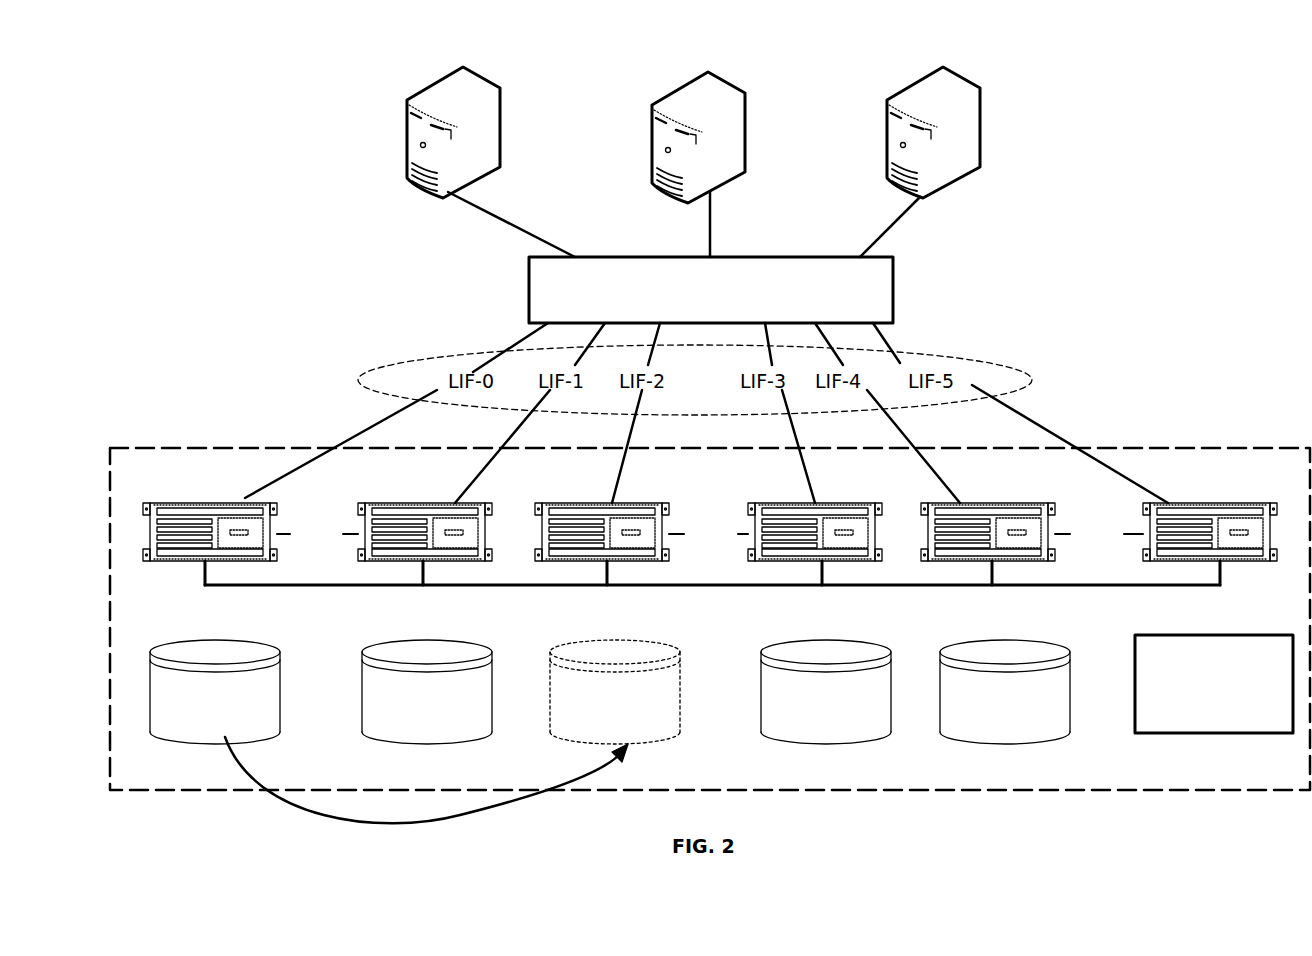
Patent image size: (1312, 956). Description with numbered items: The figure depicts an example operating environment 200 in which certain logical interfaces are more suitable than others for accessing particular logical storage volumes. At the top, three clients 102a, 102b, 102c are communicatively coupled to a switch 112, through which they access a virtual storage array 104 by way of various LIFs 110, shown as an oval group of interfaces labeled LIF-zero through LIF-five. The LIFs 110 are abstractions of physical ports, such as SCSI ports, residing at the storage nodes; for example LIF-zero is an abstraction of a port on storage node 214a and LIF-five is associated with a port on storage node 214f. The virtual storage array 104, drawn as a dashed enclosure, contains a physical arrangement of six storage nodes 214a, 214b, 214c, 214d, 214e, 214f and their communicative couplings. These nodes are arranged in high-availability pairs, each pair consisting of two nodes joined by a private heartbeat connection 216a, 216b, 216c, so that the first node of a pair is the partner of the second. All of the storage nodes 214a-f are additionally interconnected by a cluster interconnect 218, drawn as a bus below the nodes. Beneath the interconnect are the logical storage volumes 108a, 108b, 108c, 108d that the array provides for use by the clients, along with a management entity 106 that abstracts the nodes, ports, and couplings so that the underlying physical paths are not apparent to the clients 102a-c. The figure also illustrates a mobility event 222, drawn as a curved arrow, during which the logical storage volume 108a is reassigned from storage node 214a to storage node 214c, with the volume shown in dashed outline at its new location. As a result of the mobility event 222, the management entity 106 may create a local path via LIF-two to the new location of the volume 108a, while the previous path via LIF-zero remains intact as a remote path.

The operating environment 200 is at (212, 146).
The client 102a is at (495, 161).
The client 102b is at (737, 166).
The client 102c is at (971, 165).
The switch 112 is at (764, 300).
The LIFs 110 is at (416, 362).
The virtual storage array 104 is at (288, 447).
The storage node 214a is at (226, 503).
The storage node 214b is at (418, 503).
The storage node 214c is at (580, 503).
The storage node 214d is at (778, 503).
The storage node 214e is at (1005, 503).
The storage node 214f is at (1217, 503).
The heartbeat connection 216a is at (317, 534).
The heartbeat connection 216b is at (708, 534).
The heartbeat connection 216c is at (1099, 534).
The cluster interconnect 218 is at (198, 597).
The logical storage volume 108a is at (240, 720).
The logical storage volume 108b is at (402, 720).
The logical storage volume 108c is at (851, 720).
The logical storage volume 108d is at (980, 720).
The management entity 106 is at (1264, 708).
The mobility event 222 is at (426, 794).